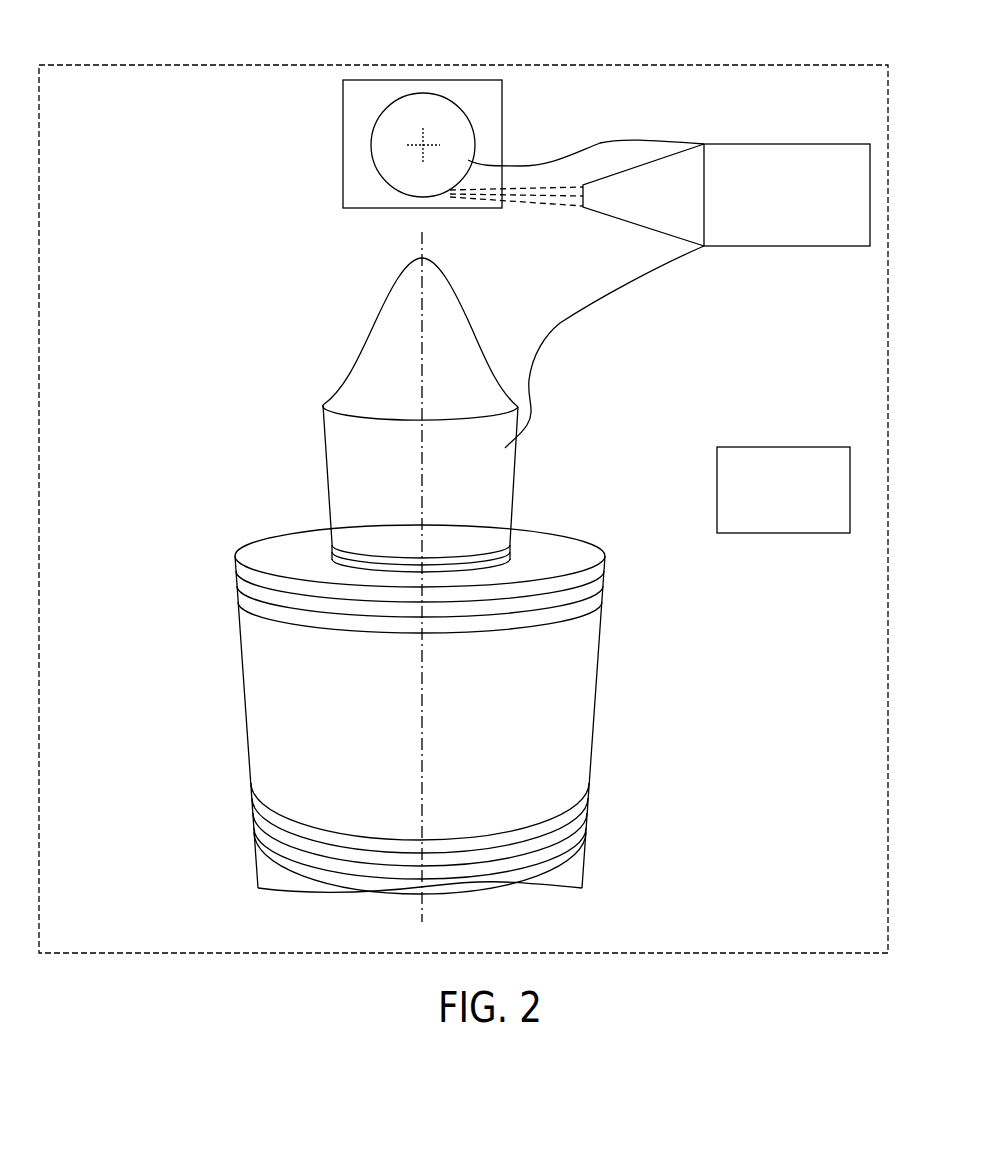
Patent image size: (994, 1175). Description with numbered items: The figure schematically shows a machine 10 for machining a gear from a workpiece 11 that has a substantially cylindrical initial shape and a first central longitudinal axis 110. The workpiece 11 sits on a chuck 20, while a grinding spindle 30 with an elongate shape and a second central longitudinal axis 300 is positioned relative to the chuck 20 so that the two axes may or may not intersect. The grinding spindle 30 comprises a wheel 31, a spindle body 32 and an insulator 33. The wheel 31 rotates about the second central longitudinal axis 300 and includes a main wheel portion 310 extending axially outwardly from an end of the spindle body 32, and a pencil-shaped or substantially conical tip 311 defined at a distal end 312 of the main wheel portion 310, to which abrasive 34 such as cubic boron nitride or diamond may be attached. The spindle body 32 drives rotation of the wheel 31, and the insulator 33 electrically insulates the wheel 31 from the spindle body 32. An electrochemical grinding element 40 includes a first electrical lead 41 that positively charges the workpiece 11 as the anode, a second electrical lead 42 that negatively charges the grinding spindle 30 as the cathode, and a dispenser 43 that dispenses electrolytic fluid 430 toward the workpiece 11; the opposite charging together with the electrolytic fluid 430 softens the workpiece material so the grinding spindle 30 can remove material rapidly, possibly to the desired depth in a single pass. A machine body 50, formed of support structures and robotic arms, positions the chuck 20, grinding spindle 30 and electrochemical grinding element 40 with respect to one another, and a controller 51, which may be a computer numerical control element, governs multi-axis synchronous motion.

The machine 10 is at (660, 64).
The workpiece 11 is at (376, 117).
The chuck 20 is at (344, 155).
The first central longitudinal axis 110 is at (427, 143).
The electrolytic fluid 430 is at (547, 190).
The electrochemical grinding (ECG) element 40 is at (808, 145).
The first electrical lead 41 is at (680, 141).
The second electrical lead 42 is at (663, 265).
The dispenser 43 is at (656, 209).
The grinding spindle 30 is at (234, 588).
The second central longitudinal axis 300 is at (418, 360).
The abrasive 34 is at (388, 315).
The distal end 312 is at (322, 408).
The wheel 31 is at (327, 472).
The tip 311 is at (555, 255).
The main wheel portion 310 is at (555, 423).
The insulator 33 is at (333, 556).
The spindle body 32 is at (251, 691).
The controller 51 is at (774, 504).
The machine body 50 is at (775, 897).